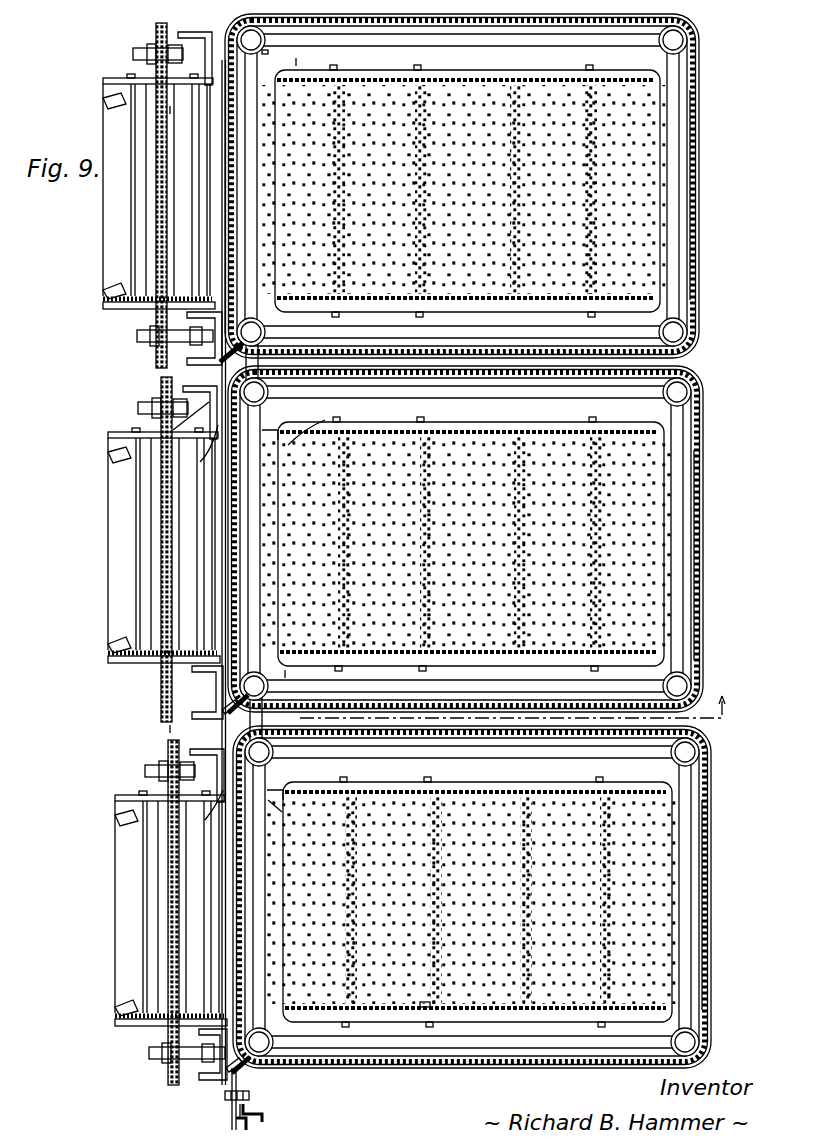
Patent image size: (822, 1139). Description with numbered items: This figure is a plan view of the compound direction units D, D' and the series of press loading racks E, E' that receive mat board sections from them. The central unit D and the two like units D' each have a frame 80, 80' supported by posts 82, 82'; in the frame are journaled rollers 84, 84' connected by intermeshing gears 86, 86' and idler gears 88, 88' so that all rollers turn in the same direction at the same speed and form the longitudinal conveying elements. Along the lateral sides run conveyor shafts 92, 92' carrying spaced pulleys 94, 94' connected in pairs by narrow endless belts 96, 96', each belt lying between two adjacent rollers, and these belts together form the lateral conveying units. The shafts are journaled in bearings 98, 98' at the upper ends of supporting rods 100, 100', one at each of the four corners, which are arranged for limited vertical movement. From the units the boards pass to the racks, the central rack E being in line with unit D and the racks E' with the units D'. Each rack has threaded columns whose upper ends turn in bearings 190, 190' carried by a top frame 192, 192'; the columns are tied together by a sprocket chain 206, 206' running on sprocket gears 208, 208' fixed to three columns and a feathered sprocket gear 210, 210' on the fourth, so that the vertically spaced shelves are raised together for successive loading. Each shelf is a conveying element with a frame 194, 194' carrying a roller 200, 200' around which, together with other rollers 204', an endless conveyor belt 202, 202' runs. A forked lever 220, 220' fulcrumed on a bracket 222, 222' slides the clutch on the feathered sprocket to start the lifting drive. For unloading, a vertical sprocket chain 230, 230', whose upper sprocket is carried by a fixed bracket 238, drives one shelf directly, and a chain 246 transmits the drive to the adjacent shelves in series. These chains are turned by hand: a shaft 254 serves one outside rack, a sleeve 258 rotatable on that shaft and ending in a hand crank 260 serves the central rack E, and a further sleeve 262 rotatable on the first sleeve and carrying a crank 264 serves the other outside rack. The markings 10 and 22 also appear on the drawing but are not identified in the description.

The heater unit section line 10 is at (526, 719).
The section line indicator 22 is at (247, 397).
The frame 80 is at (151, 423).
The frame 80' is at (152, 427).
The legs or posts 82 is at (203, 552).
The legs or posts 82' is at (202, 549).
The rollers 84 is at (142, 544).
The rollers 84' is at (144, 548).
The intermeshing gears 86 is at (161, 676).
The intermeshing gears 86' is at (153, 664).
The idler gears 88 is at (166, 820).
The idler gears 88' is at (157, 318).
The conveyor shafts 92 is at (154, 405).
The conveyor shafts 92' is at (165, 404).
The pulleys 94 is at (143, 414).
The pulleys 94' is at (164, 1050).
The endless conveyor belts 96 is at (184, 669).
The endless conveyor belts 96' is at (181, 548).
The bearings 98 is at (191, 433).
The bearings 98' is at (176, 702).
The supporting rods 100 is at (99, 552).
The supporting rods 100' is at (100, 554).
The compound direction unit D is at (152, 544).
The compound direction unit D' is at (152, 548).
The rack unit E is at (466, 526).
The rack unit E' is at (468, 526).
The bearings 190 is at (491, 505).
The bearings 190' is at (497, 541).
The top frame 192 is at (471, 539).
The top frame 192' is at (473, 541).
The frame 194 is at (469, 537).
The frame 194' is at (471, 672).
The roller 200 is at (300, 427).
The roller 200' is at (307, 787).
The endless conveyor belt 202 is at (719, 555).
The endless conveyor belt 202' is at (722, 550).
The rollers 204' is at (409, 1020).
The sprocket chain 206 is at (487, 539).
The sprocket chain 206' is at (484, 552).
The sprocket gears 208 is at (490, 539).
The sprocket gears 208' is at (496, 541).
The sprocket gear 210 is at (464, 546).
The sprocket gear 210' is at (468, 548).
The forked lever 220 is at (217, 714).
The forked lever 220' is at (226, 1072).
The bracket 222 is at (259, 535).
The bracket 222' is at (263, 1072).
The sprocket chain 230 is at (202, 631).
The sprocket chain 230' is at (297, 38).
The fixed bracket 238 is at (326, 419).
The chain 246 is at (278, 810).
The shaft 254 is at (222, 210).
The sleeve 258 is at (238, 1112).
The hand crank 260 is at (258, 1127).
The sleeve 262 is at (227, 1092).
The crank 264 is at (262, 1110).